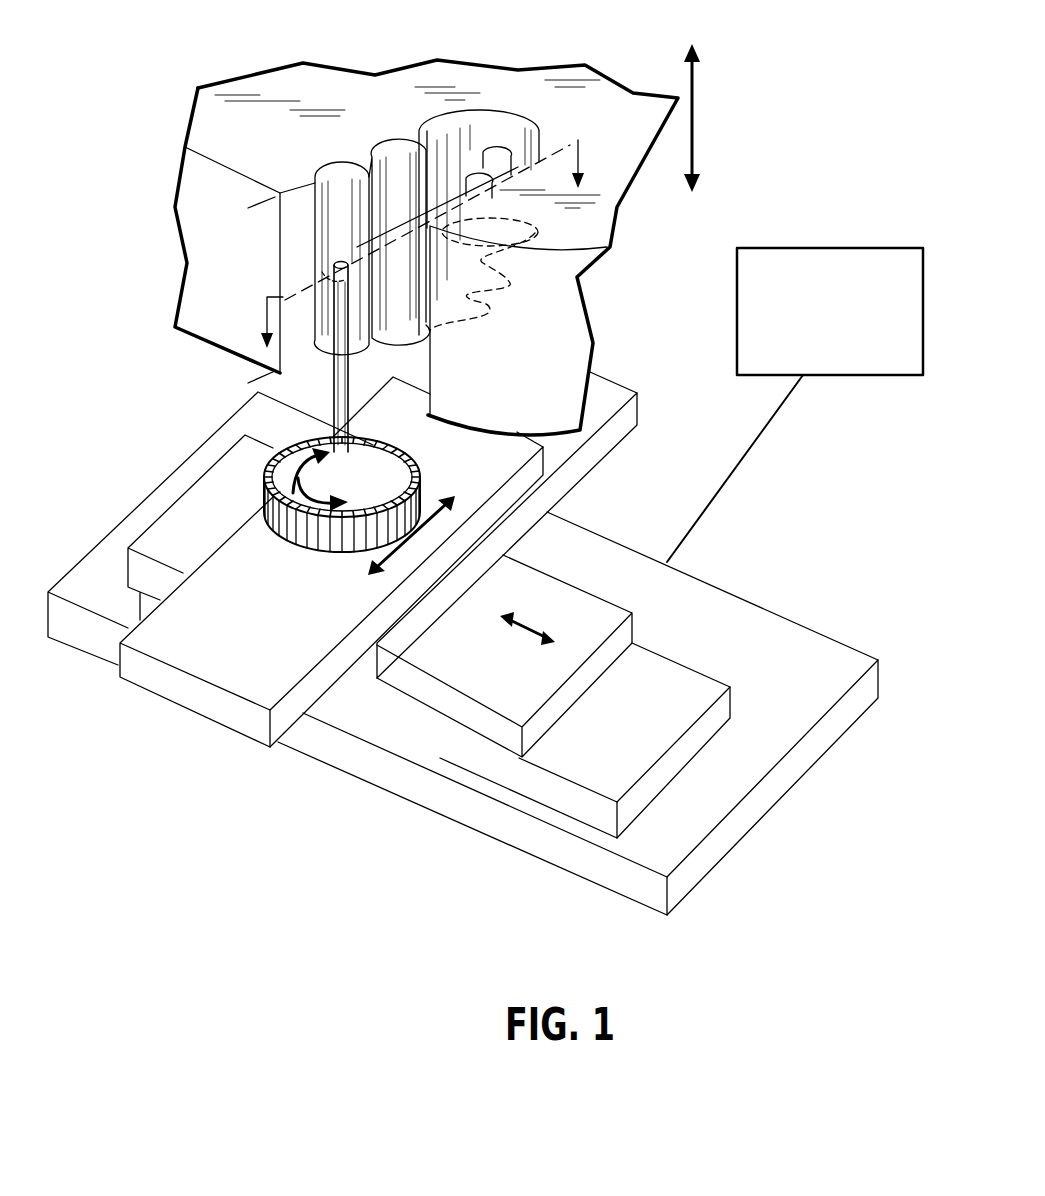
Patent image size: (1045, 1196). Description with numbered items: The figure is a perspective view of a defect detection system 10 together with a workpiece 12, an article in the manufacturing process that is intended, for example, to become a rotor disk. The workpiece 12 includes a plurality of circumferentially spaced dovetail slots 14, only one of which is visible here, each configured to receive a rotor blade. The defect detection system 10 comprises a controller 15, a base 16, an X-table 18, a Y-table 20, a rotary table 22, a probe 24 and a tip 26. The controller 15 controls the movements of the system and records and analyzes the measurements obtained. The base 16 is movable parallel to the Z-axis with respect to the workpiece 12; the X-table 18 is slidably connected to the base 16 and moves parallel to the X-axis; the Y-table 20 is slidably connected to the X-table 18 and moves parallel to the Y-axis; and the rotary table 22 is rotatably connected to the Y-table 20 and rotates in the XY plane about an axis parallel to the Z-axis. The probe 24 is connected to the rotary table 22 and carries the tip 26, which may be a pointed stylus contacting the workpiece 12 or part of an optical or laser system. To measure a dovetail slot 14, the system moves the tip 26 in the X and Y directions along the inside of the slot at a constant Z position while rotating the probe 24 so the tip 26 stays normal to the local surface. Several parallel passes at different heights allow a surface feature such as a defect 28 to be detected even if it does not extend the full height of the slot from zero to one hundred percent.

The defect detection system 10 is at (782, 550).
The workpiece 12 is at (328, 78).
The dovetail slot 14 is at (497, 112).
The controller 15 is at (731, 310).
The base 16 is at (825, 660).
The X-table 18 is at (660, 650).
The Y-table 20 is at (296, 730).
The rotary table 22 is at (307, 552).
The probe 24 is at (345, 385).
The tip 26 is at (327, 268).
The defect 28 is at (342, 188).